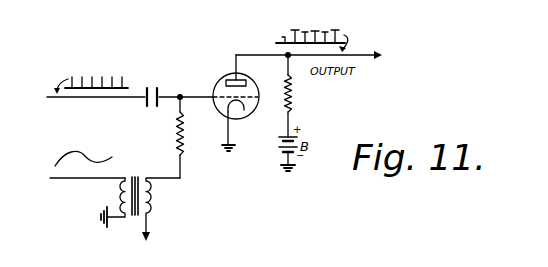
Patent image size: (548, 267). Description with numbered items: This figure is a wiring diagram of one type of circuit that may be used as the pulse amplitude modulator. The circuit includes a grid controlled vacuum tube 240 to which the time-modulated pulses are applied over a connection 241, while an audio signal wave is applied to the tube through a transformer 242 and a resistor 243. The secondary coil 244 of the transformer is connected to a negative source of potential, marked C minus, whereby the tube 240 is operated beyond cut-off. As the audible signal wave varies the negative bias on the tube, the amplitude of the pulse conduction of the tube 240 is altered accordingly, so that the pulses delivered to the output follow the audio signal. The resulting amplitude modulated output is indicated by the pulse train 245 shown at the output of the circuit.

The grid controlled vacuum tube 240 is at (224, 78).
The connection 241 is at (110, 99).
The transformer 242 is at (87, 172).
The resistor 243 is at (197, 137).
The secondary coil 244 is at (154, 197).
The pulse train 245 is at (308, 30).